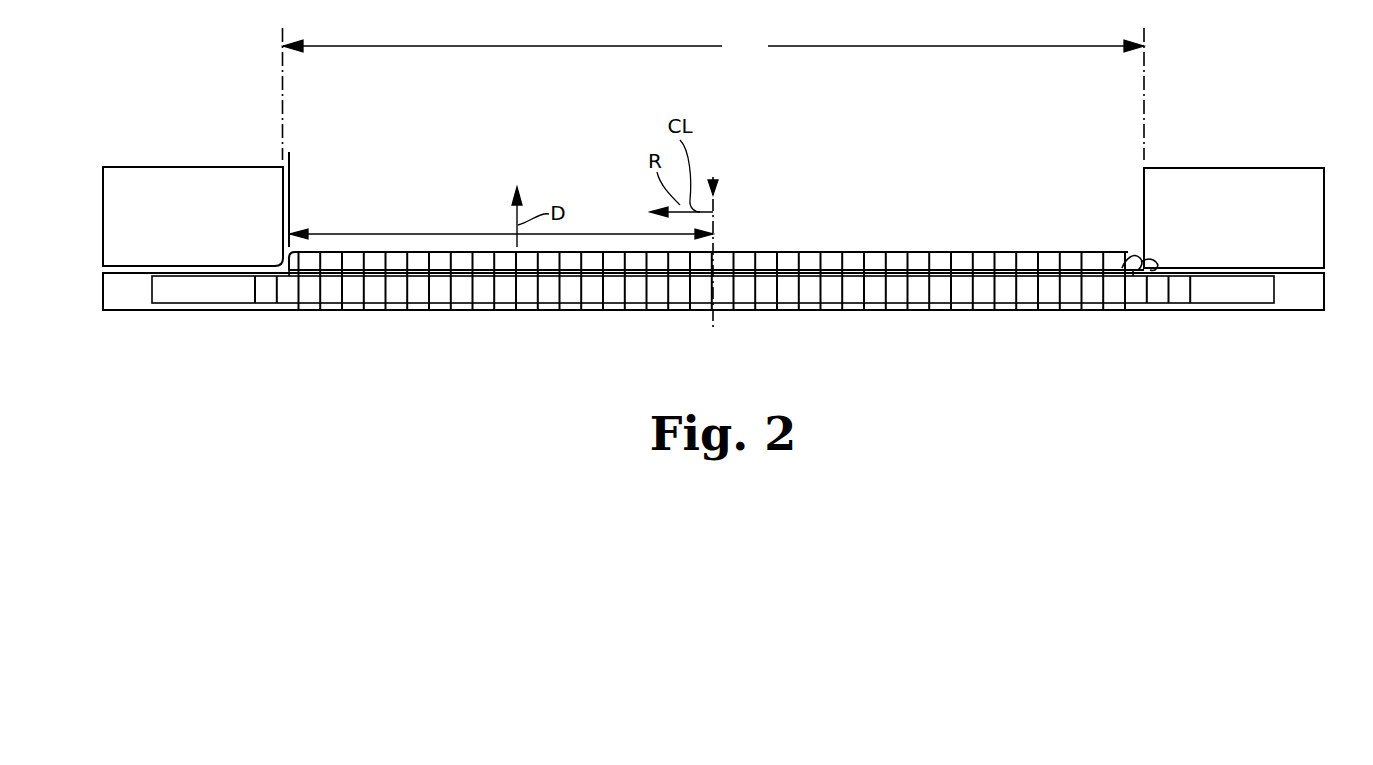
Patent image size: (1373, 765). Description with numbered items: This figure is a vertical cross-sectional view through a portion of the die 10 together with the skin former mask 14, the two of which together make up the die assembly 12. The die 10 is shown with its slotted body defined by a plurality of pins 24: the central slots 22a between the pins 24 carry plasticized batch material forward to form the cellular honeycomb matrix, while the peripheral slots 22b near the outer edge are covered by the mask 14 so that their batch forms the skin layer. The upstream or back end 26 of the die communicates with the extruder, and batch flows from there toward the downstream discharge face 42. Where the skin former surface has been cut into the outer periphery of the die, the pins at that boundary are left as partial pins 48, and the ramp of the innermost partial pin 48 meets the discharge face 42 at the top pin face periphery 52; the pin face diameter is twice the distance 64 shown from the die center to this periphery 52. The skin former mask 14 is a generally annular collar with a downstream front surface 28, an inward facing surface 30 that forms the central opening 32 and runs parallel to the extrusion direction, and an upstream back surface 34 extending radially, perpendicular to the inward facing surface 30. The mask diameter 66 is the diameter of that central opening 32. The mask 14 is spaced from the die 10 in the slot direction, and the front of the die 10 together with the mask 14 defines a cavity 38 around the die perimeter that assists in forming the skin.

The die 10 is at (1243, 290).
The die assembly 12 is at (1343, 216).
The skin former mask 14 is at (1265, 197).
The central slots 22a is at (433, 252).
The peripheral slots 22b is at (247, 287).
The pins 24 is at (335, 293).
The back end 26 is at (243, 380).
The front surface 28 is at (1222, 168).
The inward facing surface 30 is at (1138, 198).
The central opening 32 is at (713, 192).
The back surface 34 is at (1186, 278).
The cavity 38 is at (1143, 265).
The discharge face 42 is at (792, 252).
The partial pins 48 is at (292, 263).
The top pin face periphery 52 is at (290, 160).
The distance 64 is at (385, 234).
The mask diameter 66 is at (713, 46).